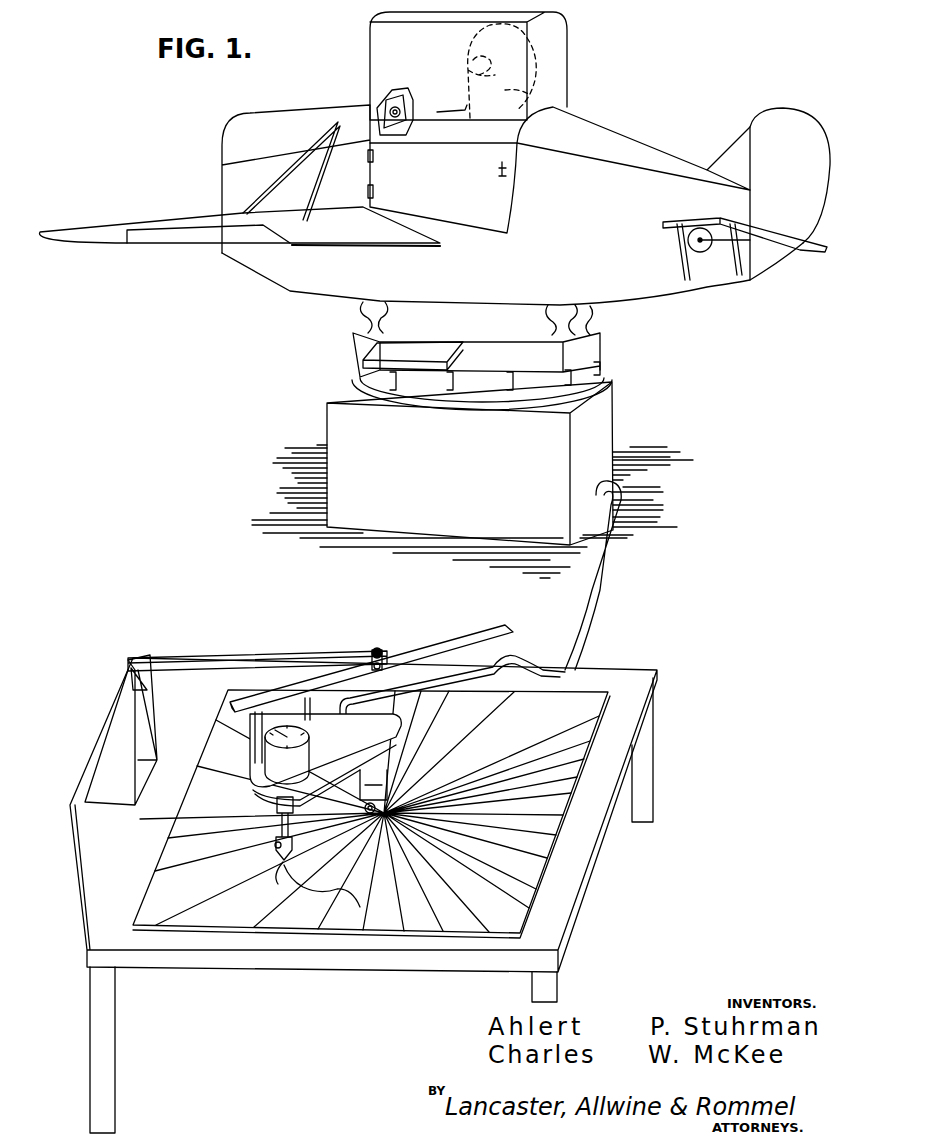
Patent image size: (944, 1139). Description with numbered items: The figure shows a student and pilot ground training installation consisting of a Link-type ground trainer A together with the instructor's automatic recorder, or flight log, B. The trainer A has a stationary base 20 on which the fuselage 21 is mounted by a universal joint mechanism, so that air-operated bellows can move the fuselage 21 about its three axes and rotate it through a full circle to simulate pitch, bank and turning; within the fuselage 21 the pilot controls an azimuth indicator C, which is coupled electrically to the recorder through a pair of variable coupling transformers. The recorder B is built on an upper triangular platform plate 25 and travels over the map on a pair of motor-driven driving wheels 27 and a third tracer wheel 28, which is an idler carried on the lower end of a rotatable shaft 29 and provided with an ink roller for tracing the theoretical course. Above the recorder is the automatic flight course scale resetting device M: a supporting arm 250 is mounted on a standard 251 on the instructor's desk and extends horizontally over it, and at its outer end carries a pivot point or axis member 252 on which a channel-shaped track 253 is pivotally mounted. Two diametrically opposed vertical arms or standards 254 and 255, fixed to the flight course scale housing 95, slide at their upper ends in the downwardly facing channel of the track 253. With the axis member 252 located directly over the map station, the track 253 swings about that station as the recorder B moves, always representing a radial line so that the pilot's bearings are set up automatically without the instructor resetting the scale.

The fuselage 21 is at (580, 177).
The azimuth indicator C is at (379, 108).
The ground trainer A is at (354, 323).
The stationary base 20 is at (330, 430).
The automatic flight course scale resetting device M is at (223, 653).
The standard 251 is at (117, 730).
The supporting arm 250 is at (270, 660).
The pivot point or axis member 252 is at (377, 650).
The channel-shaped track 253 is at (473, 630).
The arm or standard 254 is at (255, 745).
The arm or standard 255 is at (383, 684).
The automatic recorder B is at (323, 802).
The upper triangular platform plate 25 is at (403, 723).
The flight course scale housing 95 is at (307, 757).
The driving wheels 27 is at (390, 780).
The rotatable shaft 29 is at (278, 820).
The tracer wheel 28 is at (280, 867).